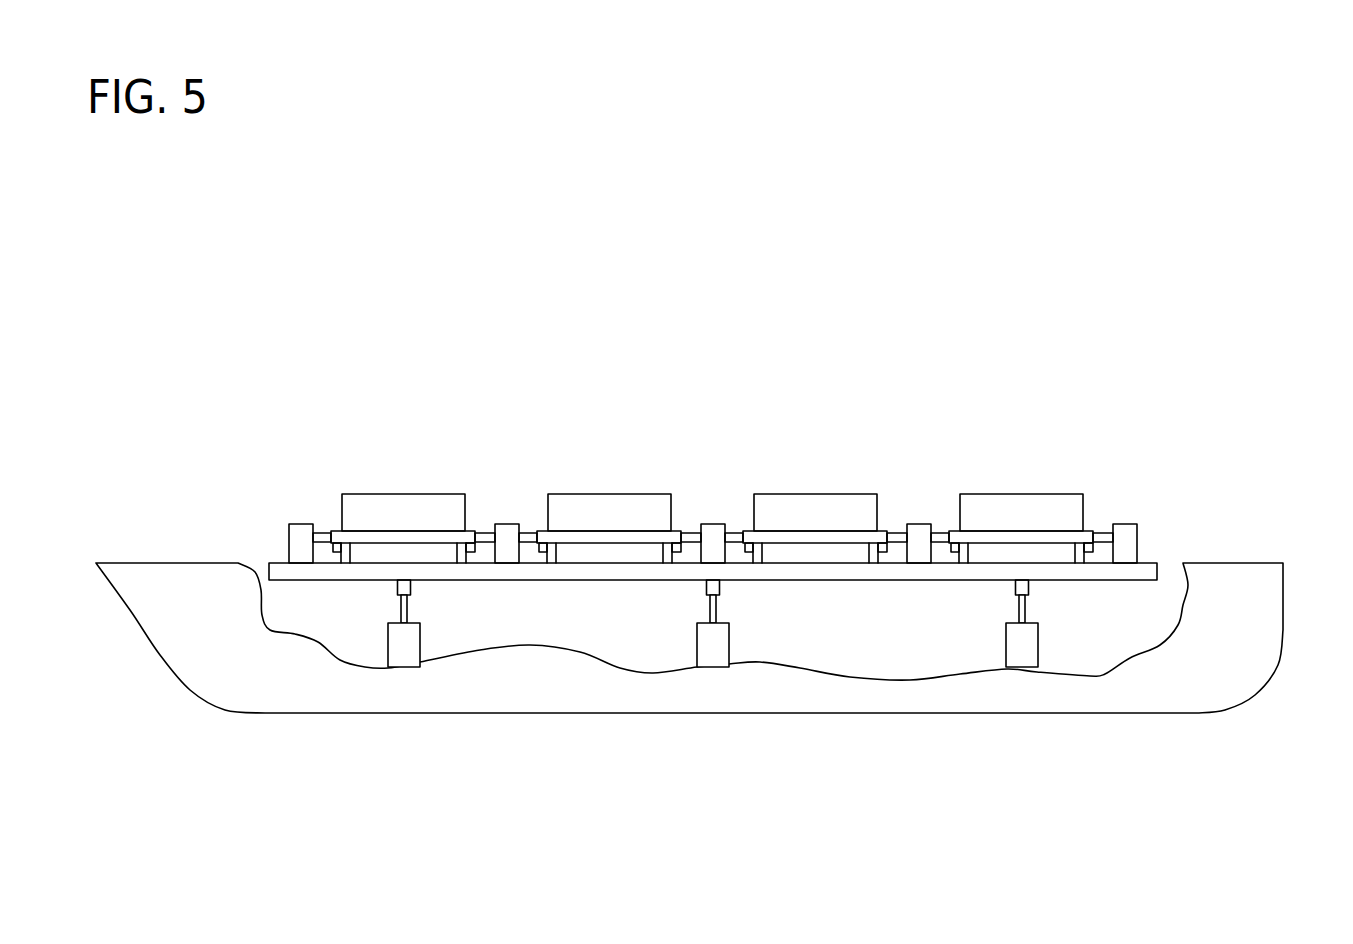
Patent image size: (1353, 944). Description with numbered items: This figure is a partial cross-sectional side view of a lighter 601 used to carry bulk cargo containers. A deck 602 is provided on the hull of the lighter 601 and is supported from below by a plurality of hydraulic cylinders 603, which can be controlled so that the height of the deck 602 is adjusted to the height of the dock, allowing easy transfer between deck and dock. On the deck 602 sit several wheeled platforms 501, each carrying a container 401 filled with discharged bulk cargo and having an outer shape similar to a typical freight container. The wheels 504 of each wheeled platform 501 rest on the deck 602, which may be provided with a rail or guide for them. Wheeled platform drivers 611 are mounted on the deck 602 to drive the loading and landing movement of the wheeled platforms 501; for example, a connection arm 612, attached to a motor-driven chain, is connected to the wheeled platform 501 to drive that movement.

The container 401 is at (404, 493).
The wheeled platform 501 is at (472, 531).
The wheels 504 is at (341, 546).
The lighter 601 is at (1272, 511).
The deck 602 is at (1146, 567).
The hydraulic cylinders 603 is at (408, 650).
The wheeled platform drivers 611 is at (301, 523).
The connection arm 612 is at (322, 533).